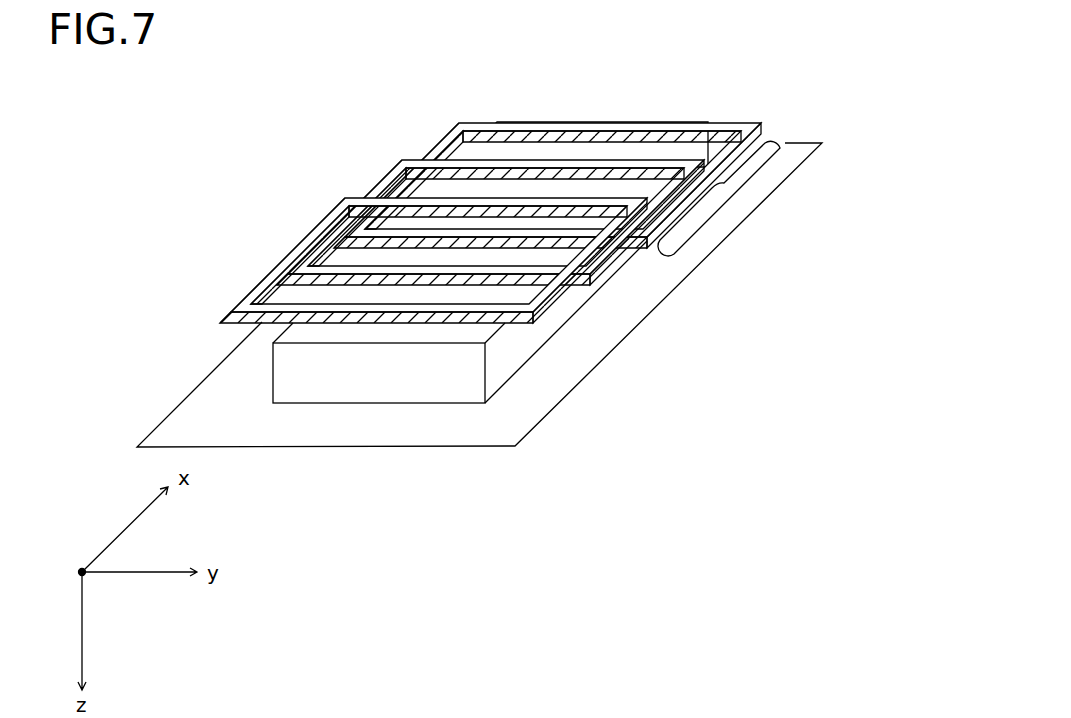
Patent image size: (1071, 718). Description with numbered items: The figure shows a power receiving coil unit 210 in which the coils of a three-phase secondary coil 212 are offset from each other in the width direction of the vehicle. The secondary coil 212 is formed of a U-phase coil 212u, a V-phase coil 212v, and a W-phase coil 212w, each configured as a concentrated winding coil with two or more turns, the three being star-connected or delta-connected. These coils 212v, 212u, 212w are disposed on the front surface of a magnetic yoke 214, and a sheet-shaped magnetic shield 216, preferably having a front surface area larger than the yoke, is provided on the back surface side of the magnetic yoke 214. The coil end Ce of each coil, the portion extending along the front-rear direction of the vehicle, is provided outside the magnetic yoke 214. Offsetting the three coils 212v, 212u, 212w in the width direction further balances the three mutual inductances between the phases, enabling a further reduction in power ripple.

The power receiving coil unit 210 is at (535, 238).
The secondary coil 212 is at (469, 202).
The U-phase coil 212u is at (402, 168).
The V-phase coil 212v is at (433, 241).
The W-phase coil 212w is at (450, 135).
The magnetic yoke 214 is at (658, 125).
The magnetic shield 216 is at (793, 156).
The coil end Ce is at (737, 205).